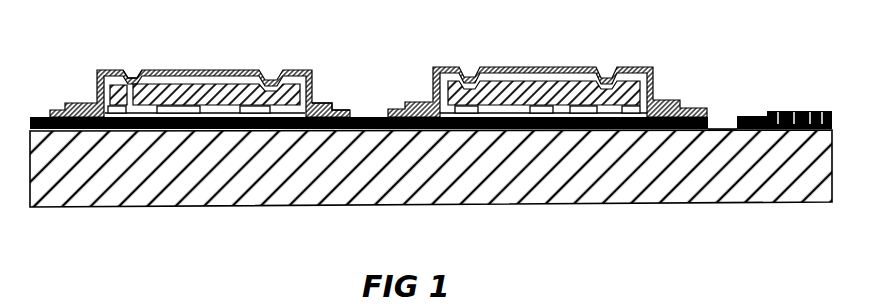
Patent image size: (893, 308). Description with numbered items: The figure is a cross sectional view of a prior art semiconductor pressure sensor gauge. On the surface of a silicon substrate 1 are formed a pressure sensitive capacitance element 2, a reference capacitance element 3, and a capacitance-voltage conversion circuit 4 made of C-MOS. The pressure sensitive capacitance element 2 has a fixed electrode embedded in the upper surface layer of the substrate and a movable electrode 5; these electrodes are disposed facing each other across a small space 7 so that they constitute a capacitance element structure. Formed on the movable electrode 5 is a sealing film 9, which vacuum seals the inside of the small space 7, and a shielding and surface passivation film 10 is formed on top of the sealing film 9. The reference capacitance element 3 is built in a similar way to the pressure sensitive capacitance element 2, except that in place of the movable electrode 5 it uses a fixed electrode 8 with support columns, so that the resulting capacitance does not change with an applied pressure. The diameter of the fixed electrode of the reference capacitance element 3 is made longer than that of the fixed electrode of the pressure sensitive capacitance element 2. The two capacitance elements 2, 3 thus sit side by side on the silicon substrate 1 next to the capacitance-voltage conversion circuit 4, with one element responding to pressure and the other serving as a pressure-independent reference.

The silicon substrate 1 is at (546, 180).
The pressure sensitive capacitance element 2 is at (214, 64).
The reference capacitance element 3 is at (547, 69).
The capacitance-voltage conversion circuit 4 is at (790, 112).
The movable electrode 5 is at (147, 73).
The small space 7 is at (207, 112).
The fixed electrode with support columns 8 is at (519, 110).
The sealing film 9 is at (225, 114).
The shielding and surface passivation film 10 is at (332, 108).